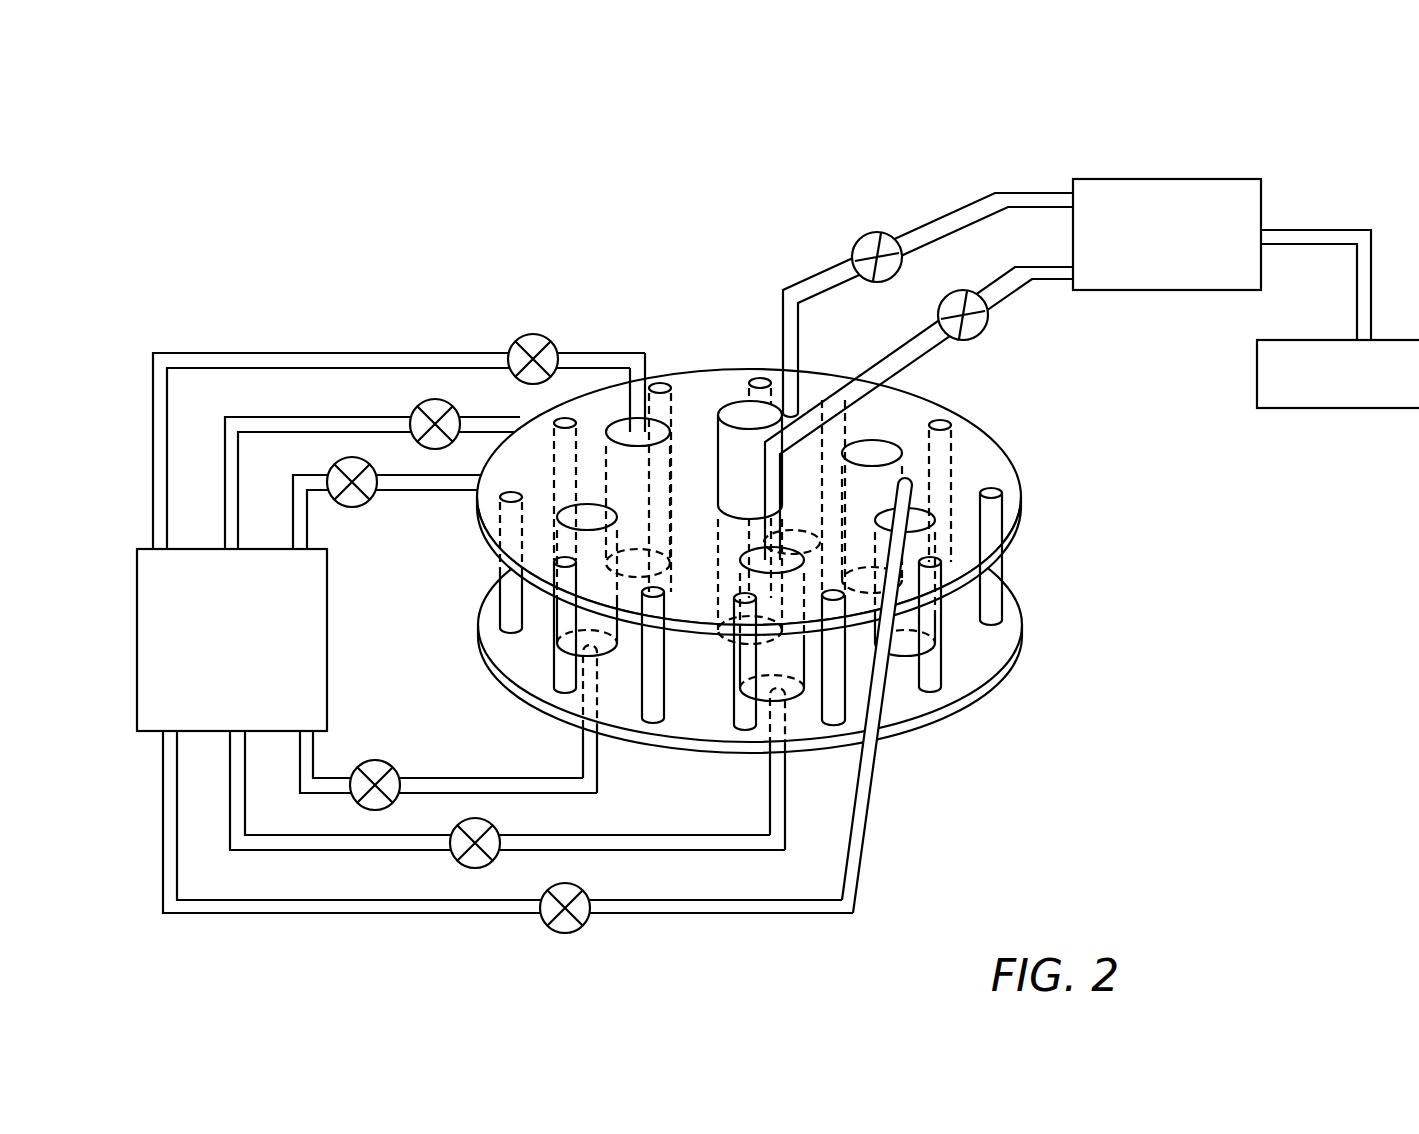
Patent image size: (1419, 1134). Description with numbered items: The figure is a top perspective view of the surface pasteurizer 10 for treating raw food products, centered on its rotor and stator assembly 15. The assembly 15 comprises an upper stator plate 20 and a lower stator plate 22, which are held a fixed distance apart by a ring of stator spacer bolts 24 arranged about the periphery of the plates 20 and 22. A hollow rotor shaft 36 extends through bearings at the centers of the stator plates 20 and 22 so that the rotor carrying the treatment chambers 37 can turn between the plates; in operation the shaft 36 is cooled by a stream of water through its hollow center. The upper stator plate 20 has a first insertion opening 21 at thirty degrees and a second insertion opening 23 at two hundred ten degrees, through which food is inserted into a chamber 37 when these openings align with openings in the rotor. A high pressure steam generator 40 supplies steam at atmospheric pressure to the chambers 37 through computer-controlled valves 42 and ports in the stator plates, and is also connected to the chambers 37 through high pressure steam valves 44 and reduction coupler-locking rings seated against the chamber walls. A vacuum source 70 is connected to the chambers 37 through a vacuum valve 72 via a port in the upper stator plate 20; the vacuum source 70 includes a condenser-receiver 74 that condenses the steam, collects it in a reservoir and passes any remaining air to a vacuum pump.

The surface pasteurizer 10 is at (800, 603).
The rotor and stator assembly 15 is at (759, 571).
The upper stator plate 20 is at (1020, 508).
The first insertion opening 21 is at (562, 518).
The lower stator plate 22 is at (973, 686).
The second insertion opening 23 is at (888, 435).
The stator spacer bolts 24 is at (998, 604).
The rotor shaft 36 is at (735, 402).
The chambers 37 is at (900, 658).
The steam generator 40 is at (330, 696).
The valves 42 is at (522, 337).
The valves 44 is at (413, 410).
The vacuum source 70 is at (1320, 410).
The valve 72 is at (855, 243).
The condenser-receiver 74 is at (1097, 178).